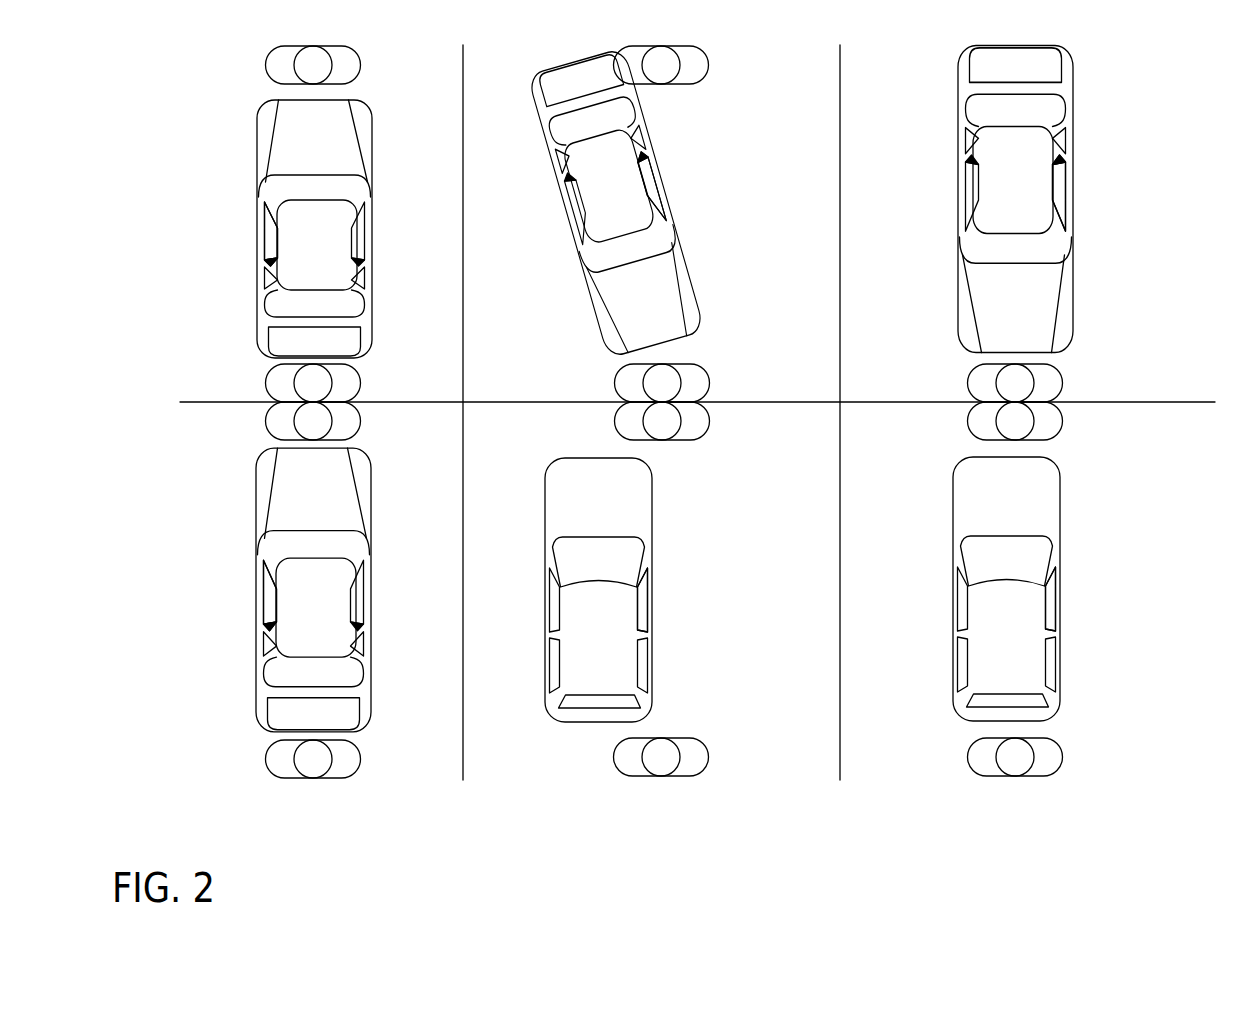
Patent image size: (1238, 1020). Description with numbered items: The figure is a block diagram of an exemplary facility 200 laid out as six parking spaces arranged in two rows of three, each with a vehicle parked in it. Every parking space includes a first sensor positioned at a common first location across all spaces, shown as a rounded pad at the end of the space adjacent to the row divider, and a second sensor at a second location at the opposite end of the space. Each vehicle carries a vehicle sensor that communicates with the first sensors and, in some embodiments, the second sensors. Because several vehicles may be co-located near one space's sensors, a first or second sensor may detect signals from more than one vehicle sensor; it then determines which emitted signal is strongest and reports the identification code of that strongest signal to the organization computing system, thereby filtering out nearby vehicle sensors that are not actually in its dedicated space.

The facility 200 is at (124, 37).